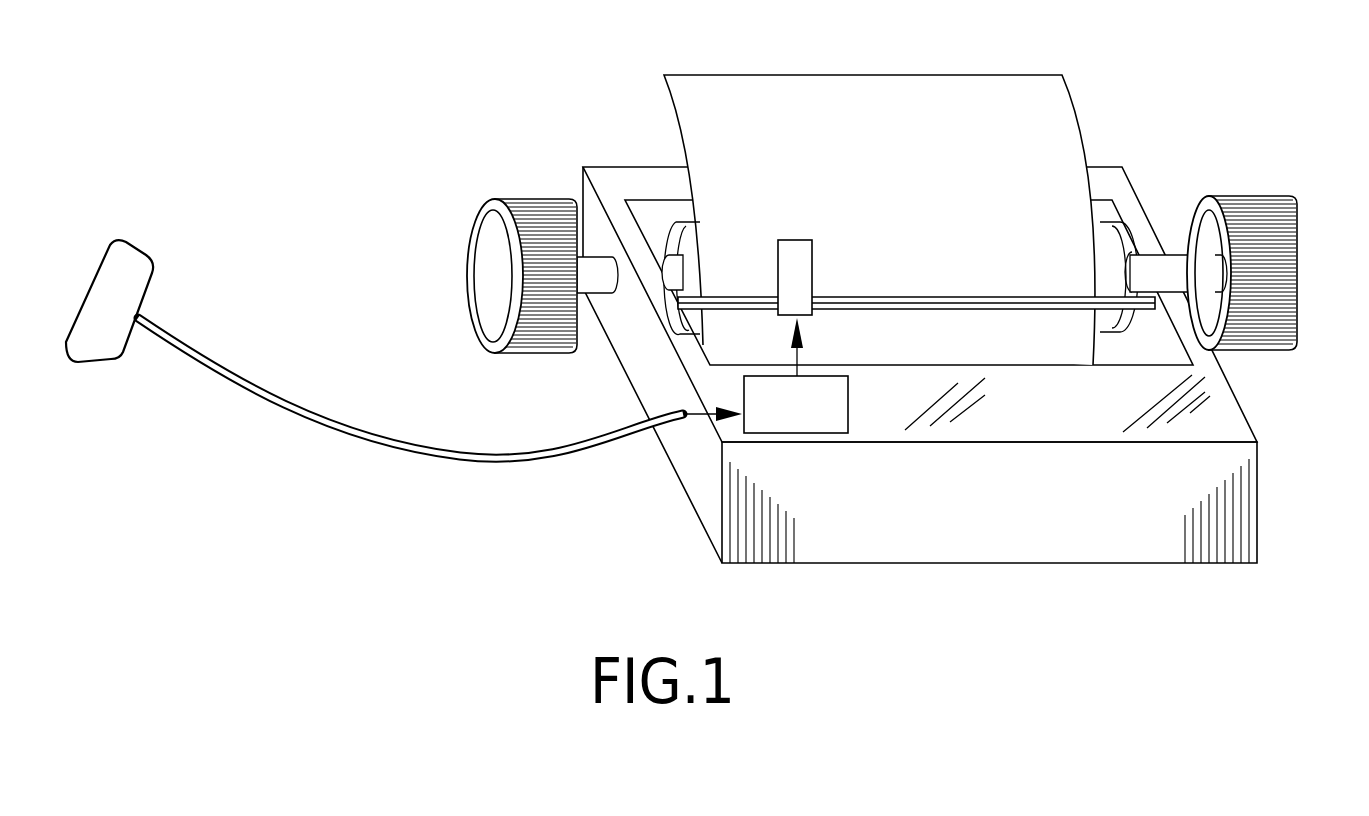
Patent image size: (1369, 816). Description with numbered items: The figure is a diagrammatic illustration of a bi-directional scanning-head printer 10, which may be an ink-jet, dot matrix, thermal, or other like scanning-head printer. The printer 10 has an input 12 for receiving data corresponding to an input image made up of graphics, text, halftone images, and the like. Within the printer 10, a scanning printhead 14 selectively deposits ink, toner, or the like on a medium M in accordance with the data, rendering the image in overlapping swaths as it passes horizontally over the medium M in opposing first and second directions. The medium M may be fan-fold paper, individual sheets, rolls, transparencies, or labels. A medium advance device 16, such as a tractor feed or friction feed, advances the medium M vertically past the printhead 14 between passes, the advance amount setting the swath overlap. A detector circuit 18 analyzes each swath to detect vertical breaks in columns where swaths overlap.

The bi-directional scanning-head printer 10 is at (440, 80).
The input 12 is at (107, 352).
The scanning printhead 14 is at (794, 262).
The medium advance device 16 is at (1280, 228).
The detector circuit 18 is at (818, 420).
The medium M is at (1045, 95).